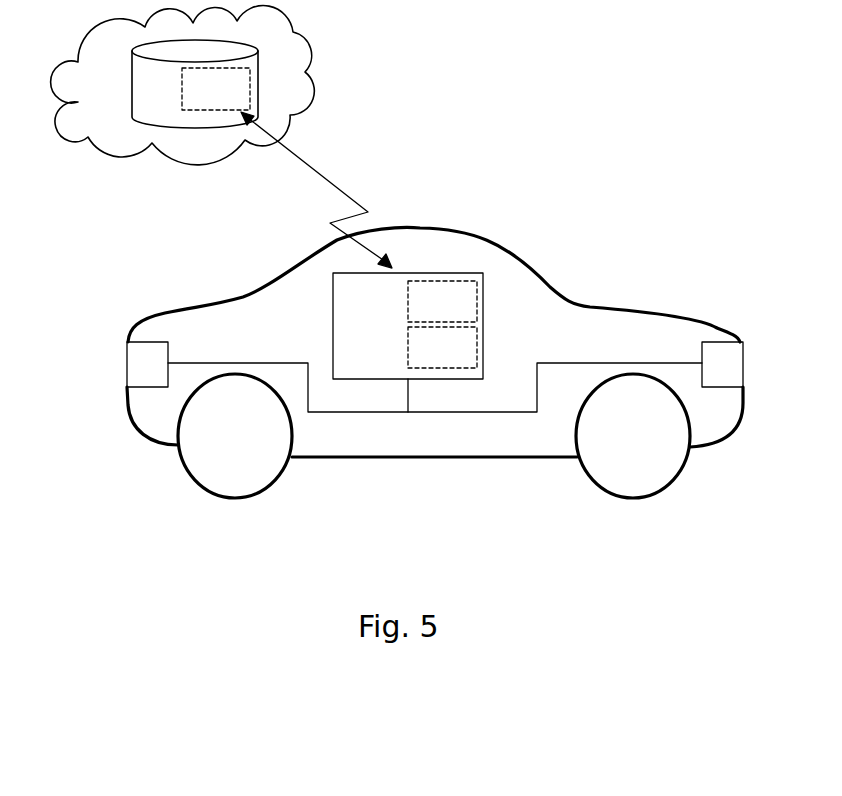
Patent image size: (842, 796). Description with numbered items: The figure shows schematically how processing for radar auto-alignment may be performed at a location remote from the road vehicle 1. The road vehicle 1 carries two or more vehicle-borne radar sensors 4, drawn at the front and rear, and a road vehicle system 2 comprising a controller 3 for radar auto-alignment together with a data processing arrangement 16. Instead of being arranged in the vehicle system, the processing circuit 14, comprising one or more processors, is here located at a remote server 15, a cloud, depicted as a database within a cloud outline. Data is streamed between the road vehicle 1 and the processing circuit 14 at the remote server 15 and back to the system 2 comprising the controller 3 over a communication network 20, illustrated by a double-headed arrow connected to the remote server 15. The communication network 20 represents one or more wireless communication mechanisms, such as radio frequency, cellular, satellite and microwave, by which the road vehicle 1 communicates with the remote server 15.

The road vehicle 1 is at (487, 222).
The road vehicle system 2 is at (354, 316).
The controller 3 is at (434, 316).
The radar sensors 4 is at (140, 380).
The processing circuit 14 is at (200, 103).
The remote server 15 is at (141, 91).
The data processing arrangement 16 is at (426, 361).
The communication network 20 is at (313, 165).